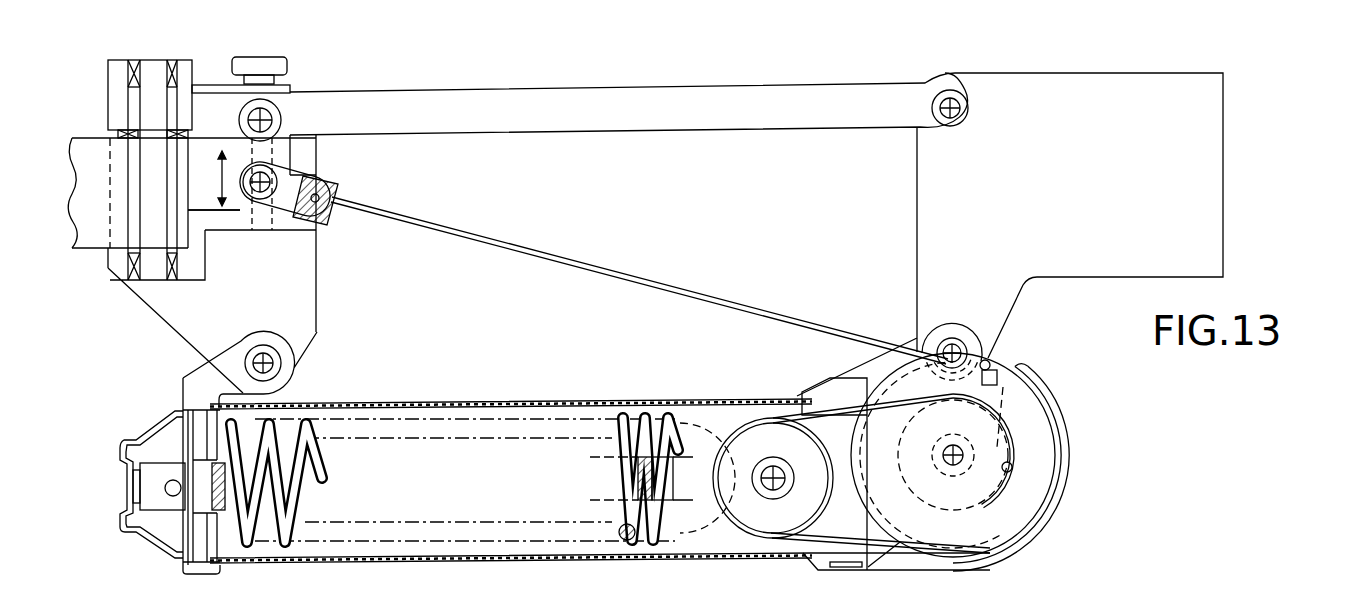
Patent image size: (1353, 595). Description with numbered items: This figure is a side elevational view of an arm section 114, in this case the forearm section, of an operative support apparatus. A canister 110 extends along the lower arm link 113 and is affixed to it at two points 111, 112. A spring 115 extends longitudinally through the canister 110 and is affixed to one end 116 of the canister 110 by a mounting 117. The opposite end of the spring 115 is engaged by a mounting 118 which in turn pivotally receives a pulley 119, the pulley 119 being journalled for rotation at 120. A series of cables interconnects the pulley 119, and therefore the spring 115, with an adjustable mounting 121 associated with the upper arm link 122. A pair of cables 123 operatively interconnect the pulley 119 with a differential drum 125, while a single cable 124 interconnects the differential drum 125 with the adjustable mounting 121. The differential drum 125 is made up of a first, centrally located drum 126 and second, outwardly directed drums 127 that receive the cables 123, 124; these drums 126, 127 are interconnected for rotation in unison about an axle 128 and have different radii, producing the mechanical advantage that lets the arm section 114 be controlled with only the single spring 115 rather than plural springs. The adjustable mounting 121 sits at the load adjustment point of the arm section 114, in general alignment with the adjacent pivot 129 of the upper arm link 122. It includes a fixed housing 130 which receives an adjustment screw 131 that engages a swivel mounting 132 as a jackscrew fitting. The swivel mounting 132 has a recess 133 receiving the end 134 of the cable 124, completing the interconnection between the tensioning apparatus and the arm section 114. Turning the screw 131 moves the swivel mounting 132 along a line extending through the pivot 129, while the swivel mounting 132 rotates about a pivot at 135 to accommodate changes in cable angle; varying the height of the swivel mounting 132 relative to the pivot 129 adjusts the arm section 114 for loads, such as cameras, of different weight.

The canister 110 is at (540, 398).
The affixing point 111 is at (273, 362).
The affixing point 112 is at (963, 338).
The lower arm link 113 is at (862, 373).
The arm section 114 is at (667, 170).
The spring 115 is at (330, 470).
The end of canister 116 is at (168, 412).
The mounting 117 is at (163, 503).
The mounting 118 is at (682, 490).
The pulley 119 is at (765, 517).
The journal 120 is at (760, 458).
The adjustable mounting 121 is at (295, 122).
The upper arm link 122 is at (553, 100).
The cables 123 is at (1018, 540).
The cable 124 is at (642, 276).
The differential drum 125 is at (1080, 460).
The first drum 126 is at (1060, 426).
The second drums 127 is at (995, 426).
The axle 128 is at (965, 462).
The pivot 129 is at (272, 110).
The fixed housing 130 is at (308, 158).
The adjustment screw 131 is at (259, 57).
The swivel mounting 132 is at (293, 214).
The recess 133 is at (340, 191).
The cable end 134 is at (322, 222).
The pivot 135 is at (252, 199).